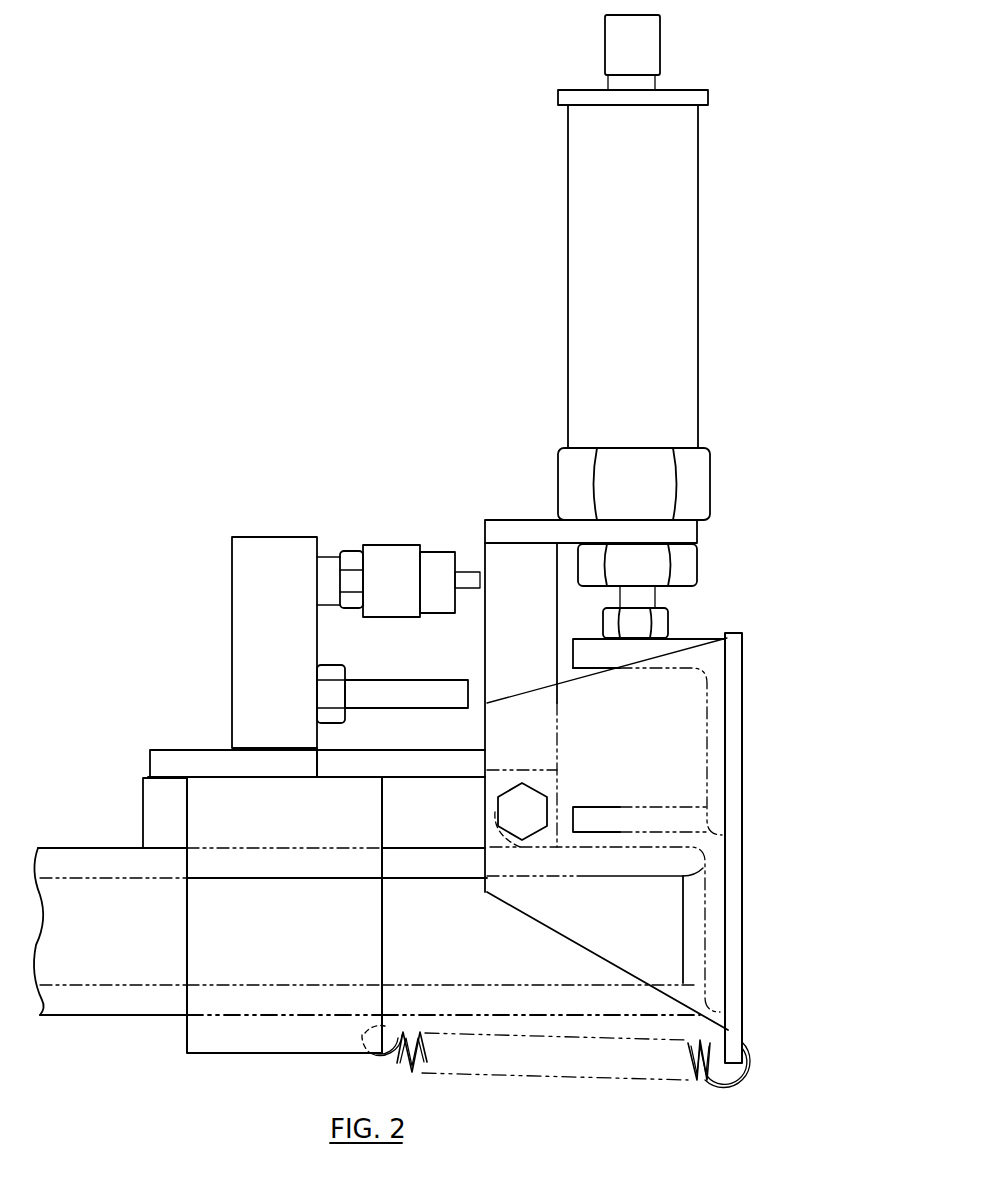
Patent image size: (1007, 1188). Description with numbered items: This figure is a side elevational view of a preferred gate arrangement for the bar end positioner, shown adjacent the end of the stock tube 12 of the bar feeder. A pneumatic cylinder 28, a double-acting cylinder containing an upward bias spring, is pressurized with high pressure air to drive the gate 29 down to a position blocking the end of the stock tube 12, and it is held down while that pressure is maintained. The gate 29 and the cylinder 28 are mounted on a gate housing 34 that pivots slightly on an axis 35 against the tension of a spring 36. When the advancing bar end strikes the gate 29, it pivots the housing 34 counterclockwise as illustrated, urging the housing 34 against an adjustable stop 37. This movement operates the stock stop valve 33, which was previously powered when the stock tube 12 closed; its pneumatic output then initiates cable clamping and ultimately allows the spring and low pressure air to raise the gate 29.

The stock tube 12 is at (103, 1003).
The pneumatic cylinder 28 is at (595, 288).
The gate 29 is at (713, 663).
The stock stop valve 33 is at (393, 545).
The gate housing 34 is at (663, 755).
The axis 35 is at (507, 793).
The spring 36 is at (549, 1069).
The adjustable stop 37 is at (418, 681).